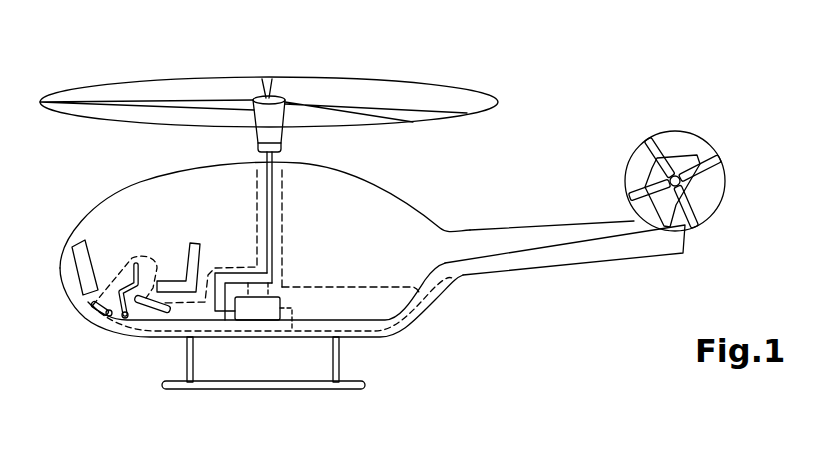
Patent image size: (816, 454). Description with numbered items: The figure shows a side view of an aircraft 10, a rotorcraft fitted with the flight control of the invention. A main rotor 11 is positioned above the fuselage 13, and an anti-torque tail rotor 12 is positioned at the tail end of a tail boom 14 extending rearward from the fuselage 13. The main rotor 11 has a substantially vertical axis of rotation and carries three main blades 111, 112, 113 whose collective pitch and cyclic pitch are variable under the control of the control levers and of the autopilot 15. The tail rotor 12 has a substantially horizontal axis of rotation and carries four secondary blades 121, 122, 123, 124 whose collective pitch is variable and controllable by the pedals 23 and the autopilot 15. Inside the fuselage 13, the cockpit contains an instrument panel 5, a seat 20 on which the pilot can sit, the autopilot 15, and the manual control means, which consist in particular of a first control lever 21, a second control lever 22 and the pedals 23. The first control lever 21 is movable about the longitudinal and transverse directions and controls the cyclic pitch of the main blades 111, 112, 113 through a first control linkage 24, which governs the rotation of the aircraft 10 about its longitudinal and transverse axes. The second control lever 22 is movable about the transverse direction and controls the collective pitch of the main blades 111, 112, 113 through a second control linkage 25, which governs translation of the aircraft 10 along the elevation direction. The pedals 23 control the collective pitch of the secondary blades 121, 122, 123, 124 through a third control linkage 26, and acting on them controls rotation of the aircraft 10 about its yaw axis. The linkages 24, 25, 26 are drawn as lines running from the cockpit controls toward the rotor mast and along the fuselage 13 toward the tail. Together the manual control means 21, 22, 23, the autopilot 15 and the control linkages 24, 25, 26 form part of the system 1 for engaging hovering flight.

The system for engaging hovering flight 1 is at (370, 287).
The instrument panel 5 is at (80, 262).
The aircraft 10 is at (308, 397).
The main rotor 11 is at (433, 82).
The main blade 111 is at (73, 100).
The main blade 112 is at (418, 123).
The main blade 113 is at (267, 77).
The anti-torque tail rotor 12 is at (726, 200).
The secondary blade 121 is at (640, 198).
The secondary blade 122 is at (653, 140).
The secondary blade 123 is at (715, 162).
The secondary blade 124 is at (693, 227).
The fuselage 13 is at (417, 330).
The tail boom 14 is at (592, 261).
The autopilot 15 is at (247, 321).
The seat 20 is at (192, 260).
The first control lever 21 is at (133, 257).
The second control lever 22 is at (148, 320).
The pedals 23 is at (93, 305).
The first control linkage 24 is at (281, 221).
The second control linkage 25 is at (256, 197).
The third control linkage 26 is at (423, 282).